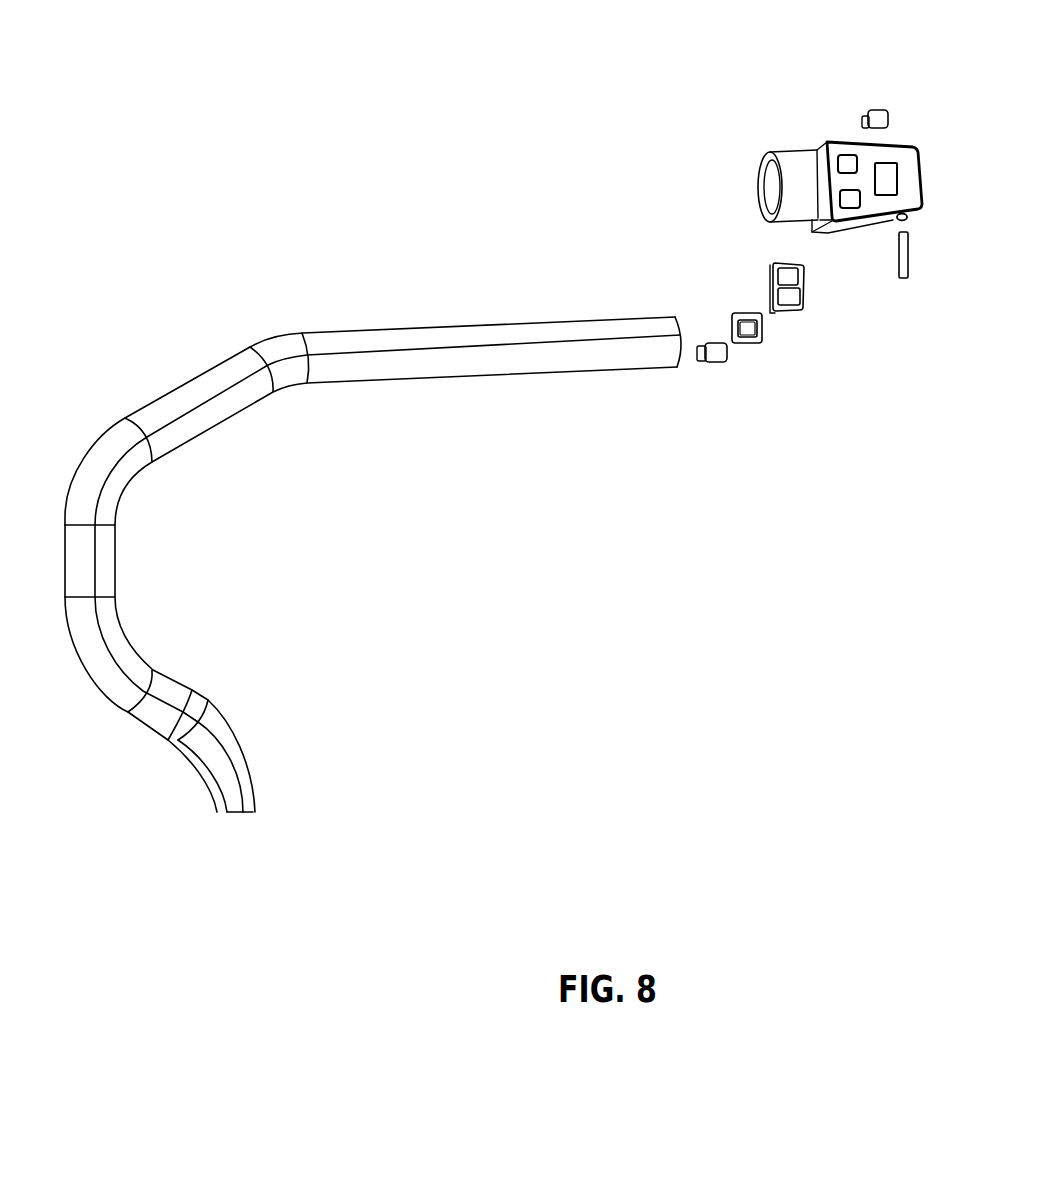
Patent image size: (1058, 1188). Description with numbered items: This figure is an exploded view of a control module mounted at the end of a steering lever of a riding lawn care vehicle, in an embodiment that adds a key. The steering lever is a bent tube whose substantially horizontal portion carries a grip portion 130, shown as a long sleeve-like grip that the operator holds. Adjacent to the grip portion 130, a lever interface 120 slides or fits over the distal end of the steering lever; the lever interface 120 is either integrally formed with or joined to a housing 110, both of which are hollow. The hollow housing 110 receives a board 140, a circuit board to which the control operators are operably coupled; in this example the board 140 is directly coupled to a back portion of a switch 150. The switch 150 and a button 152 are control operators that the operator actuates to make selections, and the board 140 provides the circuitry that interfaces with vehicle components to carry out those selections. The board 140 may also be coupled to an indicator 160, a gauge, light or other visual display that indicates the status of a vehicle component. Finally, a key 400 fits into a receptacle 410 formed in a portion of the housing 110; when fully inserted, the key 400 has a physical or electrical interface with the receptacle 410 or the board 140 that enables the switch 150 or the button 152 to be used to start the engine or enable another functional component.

The housing 110 is at (817, 150).
The lever interface 120 is at (762, 172).
The grip portion 130 is at (373, 541).
The board 140 is at (804, 360).
The switch 150 is at (851, 311).
The button 152 is at (894, 81).
The indicator 160 is at (669, 380).
The key 400 is at (879, 274).
The receptacle 410 is at (851, 240).